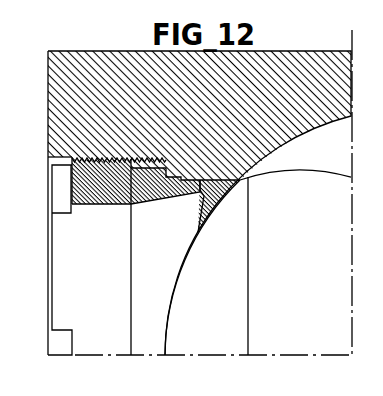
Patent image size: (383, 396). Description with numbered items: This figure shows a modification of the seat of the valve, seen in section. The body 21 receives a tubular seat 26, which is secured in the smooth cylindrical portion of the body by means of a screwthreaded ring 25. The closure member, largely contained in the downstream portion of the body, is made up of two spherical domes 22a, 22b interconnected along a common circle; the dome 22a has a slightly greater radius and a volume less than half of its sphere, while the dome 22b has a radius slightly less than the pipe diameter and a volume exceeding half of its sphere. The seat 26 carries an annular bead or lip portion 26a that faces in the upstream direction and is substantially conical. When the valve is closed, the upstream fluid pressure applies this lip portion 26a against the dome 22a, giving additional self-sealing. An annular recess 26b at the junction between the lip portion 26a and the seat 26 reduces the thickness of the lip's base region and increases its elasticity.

The body 21 is at (128, 128).
The screwthreaded ring 25 is at (110, 193).
The tubular seat 26 is at (197, 180).
The annular bead or lip portion 26a is at (198, 218).
The annular recess 26b is at (215, 179).
The spherical dome 22a is at (190, 303).
The spherical dome 22b is at (265, 286).